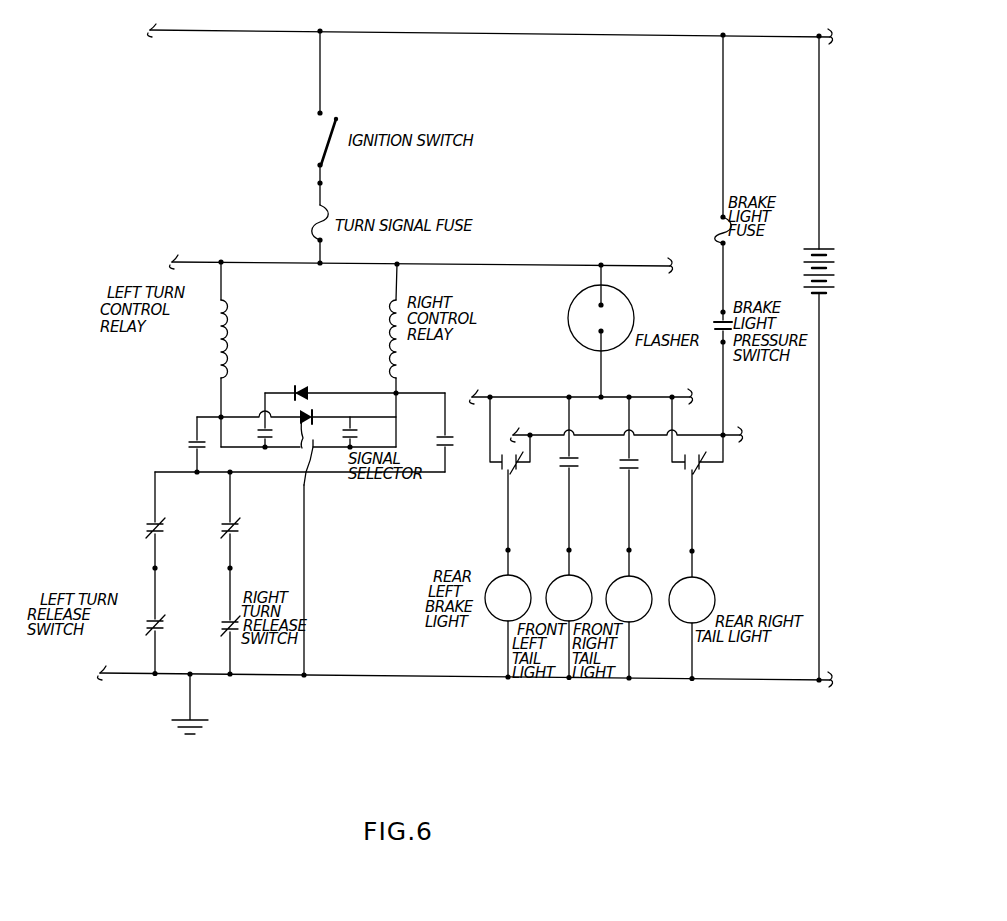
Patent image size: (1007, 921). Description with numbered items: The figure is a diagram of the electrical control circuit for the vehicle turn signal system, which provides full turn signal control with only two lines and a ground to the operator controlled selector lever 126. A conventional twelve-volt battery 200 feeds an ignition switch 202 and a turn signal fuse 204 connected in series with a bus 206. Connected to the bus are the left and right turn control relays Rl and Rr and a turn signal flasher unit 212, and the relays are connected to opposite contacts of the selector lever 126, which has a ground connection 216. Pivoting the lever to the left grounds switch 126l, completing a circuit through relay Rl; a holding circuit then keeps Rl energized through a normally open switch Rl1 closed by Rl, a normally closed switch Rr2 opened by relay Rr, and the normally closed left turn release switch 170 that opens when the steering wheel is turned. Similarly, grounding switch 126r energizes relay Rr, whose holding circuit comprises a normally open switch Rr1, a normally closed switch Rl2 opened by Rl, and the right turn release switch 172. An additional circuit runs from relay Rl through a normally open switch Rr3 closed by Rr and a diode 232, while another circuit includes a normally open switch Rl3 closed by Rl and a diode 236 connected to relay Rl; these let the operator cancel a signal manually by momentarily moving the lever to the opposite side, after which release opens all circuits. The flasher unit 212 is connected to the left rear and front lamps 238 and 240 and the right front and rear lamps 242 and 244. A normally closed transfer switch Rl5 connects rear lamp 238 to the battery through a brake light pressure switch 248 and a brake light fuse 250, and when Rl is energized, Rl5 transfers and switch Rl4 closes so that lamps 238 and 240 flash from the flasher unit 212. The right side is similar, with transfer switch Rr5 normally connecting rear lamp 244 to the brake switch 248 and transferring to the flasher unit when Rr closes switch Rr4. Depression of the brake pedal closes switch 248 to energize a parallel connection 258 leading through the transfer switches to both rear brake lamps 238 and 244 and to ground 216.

The battery 200 is at (806, 262).
The ignition switch 202 is at (336, 121).
The turn signal fuse 204 is at (316, 232).
The bus 206 is at (556, 268).
The turn signal flasher unit 212 is at (601, 352).
The ground connection 216 is at (191, 699).
The diode 232 is at (326, 370).
The diode 236 is at (309, 414).
The left rear lamp 238 is at (521, 607).
The left front lamp 240 is at (582, 607).
The right front lamp 242 is at (642, 608).
The right rear lamp 244 is at (705, 609).
The brake light pressure switch 248 is at (722, 364).
The brake light fuse 250 is at (721, 226).
The parallel connection 258 is at (613, 415).
The turn signal selector lever 126 is at (302, 545).
The left selector switch 126l is at (288, 433).
The right selector switch 126r is at (308, 476).
The left turn signal release switch 170 is at (199, 608).
The right turn signal release switch 172 is at (223, 630).
The left turn control relay Rl is at (235, 354).
The right turn control relay Rr is at (380, 355).
The normally open switch Rl1 is at (181, 446).
The normally closed switch Rl2 is at (249, 521).
The normally open switch Rl3 is at (365, 433).
The normally open switch Rl4 is at (550, 486).
The transfer switch Rl5 is at (501, 486).
The normally open switch Rr1 is at (429, 432).
The normally closed switch Rr2 is at (136, 521).
The normally open switch Rr3 is at (250, 421).
The normally open switch Rr4 is at (614, 486).
The transfer switch Rr5 is at (689, 487).